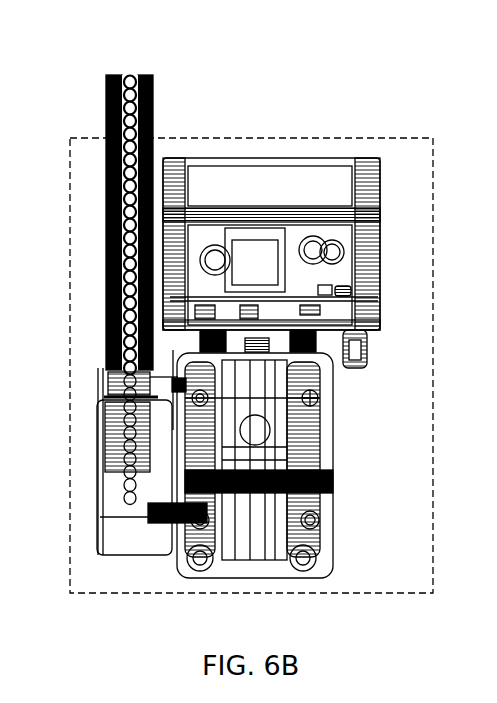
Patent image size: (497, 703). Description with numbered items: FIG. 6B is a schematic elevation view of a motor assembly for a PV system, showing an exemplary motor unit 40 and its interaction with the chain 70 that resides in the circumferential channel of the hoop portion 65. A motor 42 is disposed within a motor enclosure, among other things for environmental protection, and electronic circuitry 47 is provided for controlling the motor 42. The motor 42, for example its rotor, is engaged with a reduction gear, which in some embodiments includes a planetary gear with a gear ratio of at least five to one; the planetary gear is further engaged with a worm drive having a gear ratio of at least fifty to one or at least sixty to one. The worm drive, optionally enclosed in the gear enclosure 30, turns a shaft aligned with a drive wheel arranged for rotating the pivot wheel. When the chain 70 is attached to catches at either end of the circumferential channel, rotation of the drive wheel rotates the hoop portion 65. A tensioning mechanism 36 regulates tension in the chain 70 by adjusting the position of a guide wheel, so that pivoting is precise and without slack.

The gear enclosure 30 is at (338, 498).
The tensioning mechanism 36 is at (139, 504).
The motor unit 40 is at (437, 197).
The motor 42 is at (270, 228).
The electronic circuitry 47 is at (350, 291).
The hoop portion 65 is at (160, 105).
The chain 70 is at (134, 68).